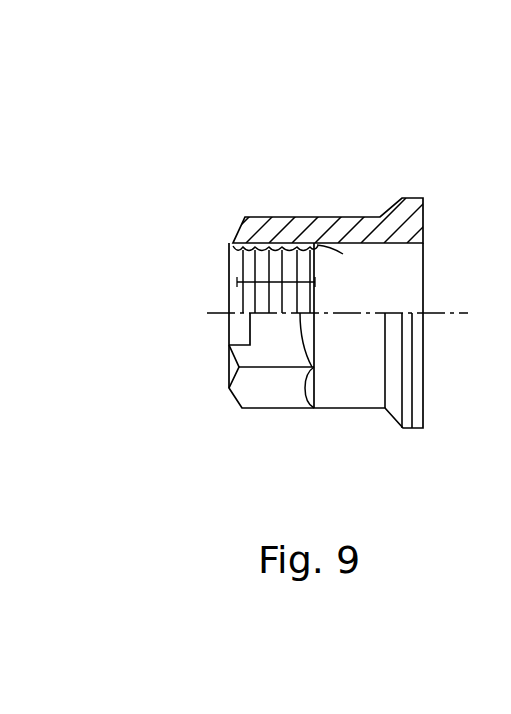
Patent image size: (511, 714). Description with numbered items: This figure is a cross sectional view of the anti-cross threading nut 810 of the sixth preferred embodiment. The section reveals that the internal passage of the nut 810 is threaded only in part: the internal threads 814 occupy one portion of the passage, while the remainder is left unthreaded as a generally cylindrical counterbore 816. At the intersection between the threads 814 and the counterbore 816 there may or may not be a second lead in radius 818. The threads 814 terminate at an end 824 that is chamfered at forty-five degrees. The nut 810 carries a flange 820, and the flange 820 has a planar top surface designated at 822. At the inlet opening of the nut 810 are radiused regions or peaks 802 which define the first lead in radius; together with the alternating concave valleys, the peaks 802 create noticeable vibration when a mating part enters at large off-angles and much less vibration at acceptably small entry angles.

The anti-cross threading nut 810 is at (455, 166).
The radiused regions or peaks 802 is at (418, 249).
The internal threads 814 is at (277, 252).
The second lead in radius 818 is at (343, 243).
The end of threads 824 is at (228, 256).
The counterbore 816 is at (352, 300).
The flange 820 is at (410, 413).
The planar top surface 822 is at (430, 400).